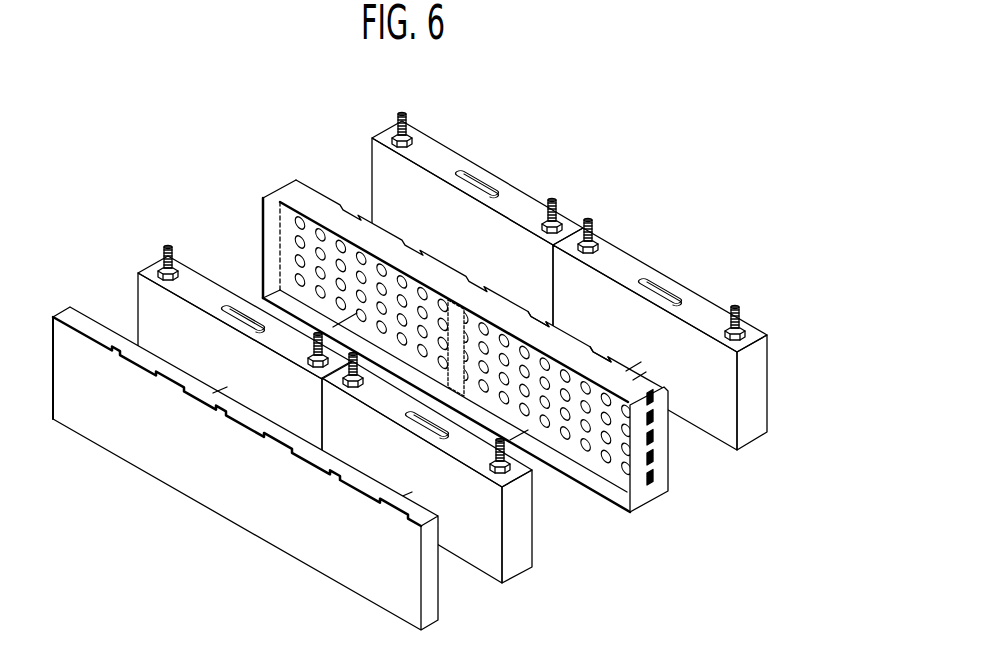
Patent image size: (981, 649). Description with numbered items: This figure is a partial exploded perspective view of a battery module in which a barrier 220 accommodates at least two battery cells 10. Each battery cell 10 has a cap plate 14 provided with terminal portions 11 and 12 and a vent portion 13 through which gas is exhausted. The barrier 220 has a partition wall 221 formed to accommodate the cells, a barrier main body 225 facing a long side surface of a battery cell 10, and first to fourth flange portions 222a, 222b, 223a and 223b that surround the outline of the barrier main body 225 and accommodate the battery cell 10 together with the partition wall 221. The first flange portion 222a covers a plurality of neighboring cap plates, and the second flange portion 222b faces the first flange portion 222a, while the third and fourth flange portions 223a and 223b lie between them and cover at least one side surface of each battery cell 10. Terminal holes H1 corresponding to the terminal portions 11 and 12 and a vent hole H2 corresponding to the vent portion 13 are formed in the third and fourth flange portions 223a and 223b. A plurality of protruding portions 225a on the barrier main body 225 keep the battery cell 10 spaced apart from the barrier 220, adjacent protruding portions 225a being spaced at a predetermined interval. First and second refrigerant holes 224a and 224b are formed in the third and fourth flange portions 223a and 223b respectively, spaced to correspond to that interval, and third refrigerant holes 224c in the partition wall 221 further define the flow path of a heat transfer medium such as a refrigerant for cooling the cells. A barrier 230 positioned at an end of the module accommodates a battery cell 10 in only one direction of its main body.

The battery cell 10 is at (378, 127).
The terminal portion 11 is at (404, 113).
The terminal portion 12 is at (551, 200).
The vent portion 13 is at (480, 174).
The cap plate 14 is at (434, 157).
The barrier 220 is at (468, 353).
The partition wall 221 is at (441, 298).
The first flange portion 222a is at (294, 180).
The second flange portion 222b is at (273, 296).
The third flange portion 223a is at (663, 485).
The fourth flange portion 223b is at (268, 220).
The first refrigerant holes 224a is at (658, 468).
The second refrigerant holes 224b is at (272, 246).
The third refrigerant holes 224c is at (468, 347).
The barrier main body 225 is at (592, 458).
The protruding portions 225a is at (618, 473).
The barrier 230 is at (340, 558).
The terminal holes H1 is at (638, 377).
The vent hole H2 is at (573, 340).